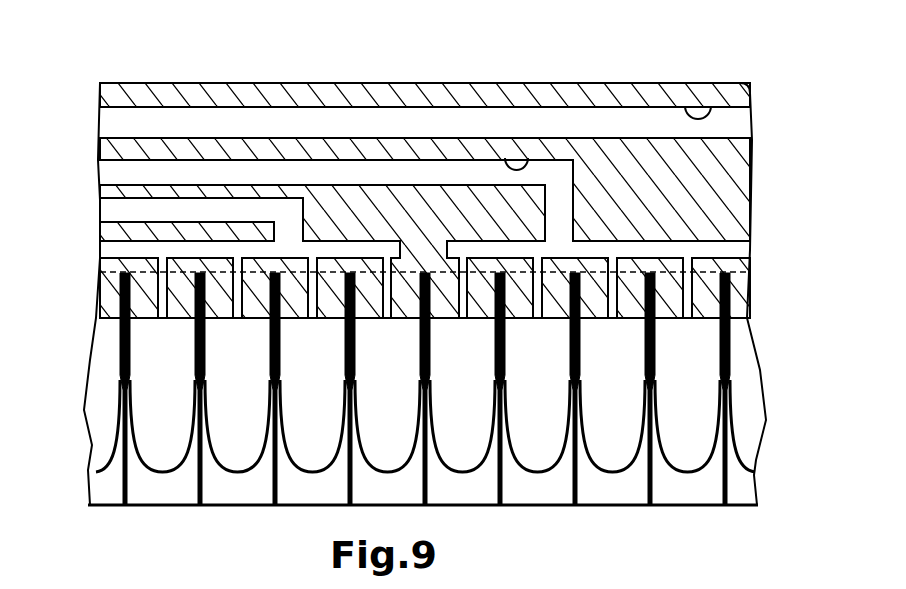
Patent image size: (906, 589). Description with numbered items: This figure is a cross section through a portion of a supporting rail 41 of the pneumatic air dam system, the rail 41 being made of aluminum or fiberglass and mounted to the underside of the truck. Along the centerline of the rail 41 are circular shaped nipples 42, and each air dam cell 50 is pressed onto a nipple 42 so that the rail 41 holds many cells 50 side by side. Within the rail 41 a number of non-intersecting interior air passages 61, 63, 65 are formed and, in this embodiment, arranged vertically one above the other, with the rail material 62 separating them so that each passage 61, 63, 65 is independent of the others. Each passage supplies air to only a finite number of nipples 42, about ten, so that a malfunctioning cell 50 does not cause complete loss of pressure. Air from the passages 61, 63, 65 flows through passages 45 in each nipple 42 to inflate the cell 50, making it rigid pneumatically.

The supporting rail 41 is at (712, 185).
The nipple 42 is at (703, 310).
The passages in the nipple 45 is at (683, 297).
The cell 50 is at (622, 505).
The interior air passage 61 is at (127, 213).
The gap layer 62 is at (712, 250).
The interior air passage 63 is at (527, 166).
The interior air passage 65 is at (712, 112).